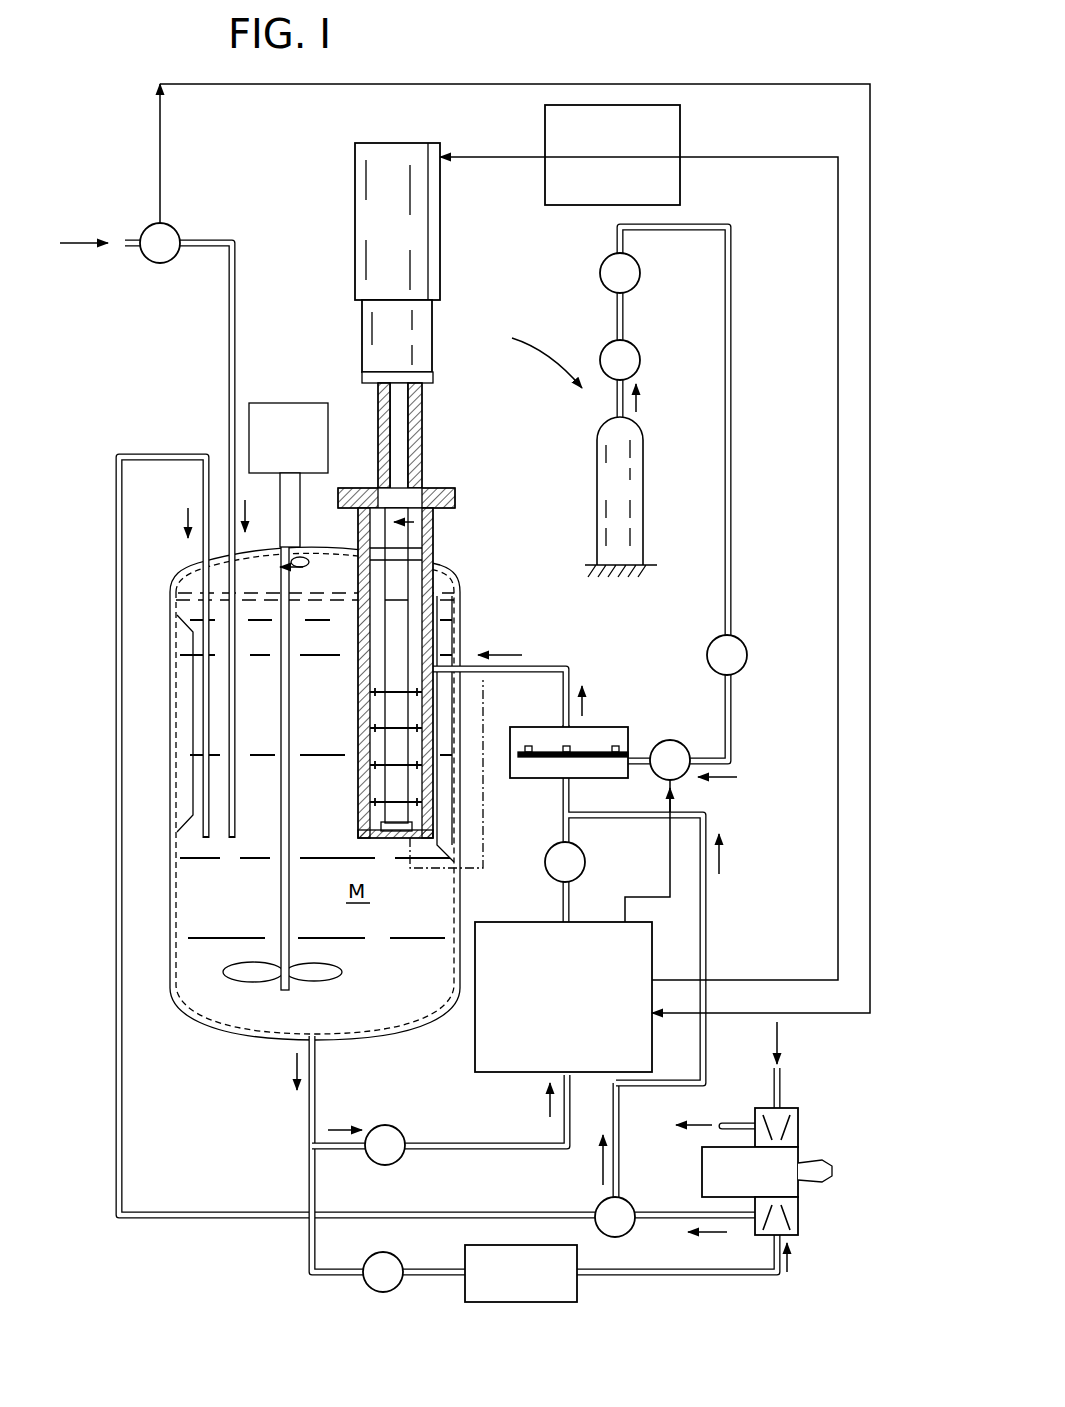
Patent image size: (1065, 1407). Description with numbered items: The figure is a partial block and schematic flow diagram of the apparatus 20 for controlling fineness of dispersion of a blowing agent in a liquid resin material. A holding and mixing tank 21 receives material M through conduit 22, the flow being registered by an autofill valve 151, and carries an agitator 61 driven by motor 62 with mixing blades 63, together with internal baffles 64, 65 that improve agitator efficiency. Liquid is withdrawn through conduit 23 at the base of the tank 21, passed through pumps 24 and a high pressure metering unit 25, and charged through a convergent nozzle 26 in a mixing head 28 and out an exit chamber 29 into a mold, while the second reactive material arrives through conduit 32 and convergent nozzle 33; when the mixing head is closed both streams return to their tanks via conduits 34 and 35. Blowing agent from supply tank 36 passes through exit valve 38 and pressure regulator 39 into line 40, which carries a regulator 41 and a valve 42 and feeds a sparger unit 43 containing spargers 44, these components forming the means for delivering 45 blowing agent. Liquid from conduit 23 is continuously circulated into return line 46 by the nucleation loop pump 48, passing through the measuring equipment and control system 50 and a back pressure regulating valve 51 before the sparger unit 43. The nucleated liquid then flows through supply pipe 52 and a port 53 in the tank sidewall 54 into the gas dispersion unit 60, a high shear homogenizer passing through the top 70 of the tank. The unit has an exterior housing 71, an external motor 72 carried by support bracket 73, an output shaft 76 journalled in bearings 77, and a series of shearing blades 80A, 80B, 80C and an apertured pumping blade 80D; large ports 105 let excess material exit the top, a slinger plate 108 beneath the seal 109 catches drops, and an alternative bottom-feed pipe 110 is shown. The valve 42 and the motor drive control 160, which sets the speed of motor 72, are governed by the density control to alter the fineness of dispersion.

The apparatus 20 is at (473, 510).
The liquid resin material holding and mixing tank 21 is at (315, 848).
The conduit 22 is at (178, 540).
The conduit 23 is at (391, 1154).
The pumps 24 is at (355, 1296).
The high pressure metering unit 25 is at (621, 1286).
The convergent nozzle 26 is at (819, 1222).
The mixing head 28 is at (725, 1170).
The exit chamber 29 is at (840, 1153).
The conduit 32 is at (811, 1066).
The convergent nozzle 33 is at (810, 1110).
The conduit 34 is at (406, 937).
The conduit 35 is at (716, 1088).
The supply tank 36 is at (637, 497).
The exit valve 38 is at (592, 363).
The pressure regulator 39 is at (604, 309).
The line 40 is at (706, 424).
The regulator 41 is at (725, 646).
The valve 42 is at (671, 736).
The sparger unit 43 is at (562, 729).
The spargers 44 is at (586, 711).
The means for delivering 45 is at (531, 354).
The return line 46 is at (439, 1139).
The nucleation loop pump 48 is at (406, 1120).
The measuring equipment and control system 50 is at (619, 926).
The back pressure regulating valve 51 is at (592, 904).
The supply pipe 52 is at (633, 685).
The port 53 is at (493, 674).
The tank sidewall 54 is at (370, 589).
The gas dispersion unit 60 is at (495, 471).
The agitator 61 is at (243, 767).
The motor 62 is at (288, 440).
The mixing blades 63 is at (251, 1009).
The internal baffle 64 is at (329, 836).
The internal baffle 65 is at (487, 729).
The top 70 is at (450, 673).
The exterior housing 71 is at (456, 660).
The external motor 72 is at (429, 263).
The support bracket 73 is at (359, 413).
The output shaft 76 is at (432, 427).
The bearings 77 is at (463, 435).
The shearing blade 80A is at (361, 672).
The shearing blade 80B is at (361, 709).
The shearing blade 80C is at (361, 779).
The apertured pumping blade 80D is at (361, 823).
The ports 105 is at (349, 569).
The slinger plate 108 is at (379, 509).
The seal 109 is at (468, 439).
The pipe 110 is at (480, 774).
The autofill valve 151 is at (195, 225).
The motor drive control 160 is at (639, 542).